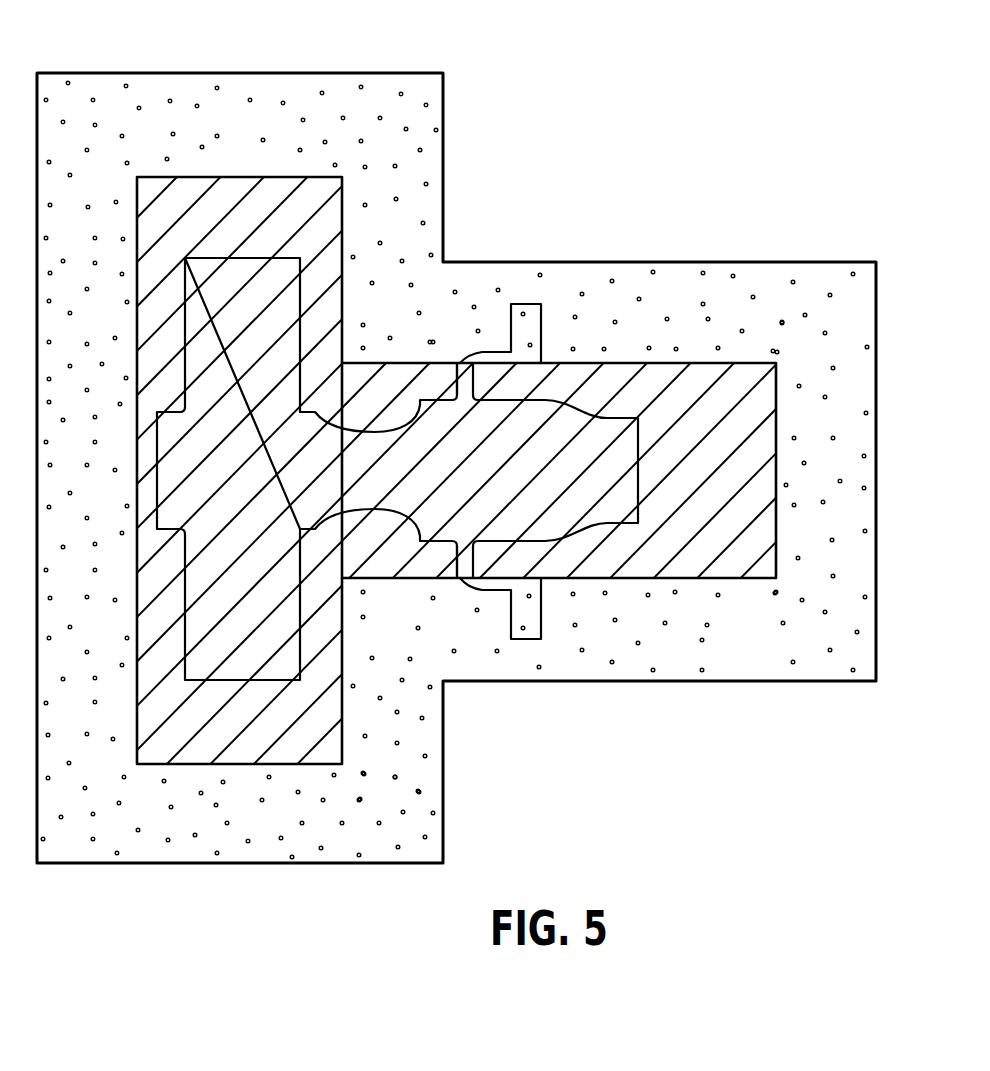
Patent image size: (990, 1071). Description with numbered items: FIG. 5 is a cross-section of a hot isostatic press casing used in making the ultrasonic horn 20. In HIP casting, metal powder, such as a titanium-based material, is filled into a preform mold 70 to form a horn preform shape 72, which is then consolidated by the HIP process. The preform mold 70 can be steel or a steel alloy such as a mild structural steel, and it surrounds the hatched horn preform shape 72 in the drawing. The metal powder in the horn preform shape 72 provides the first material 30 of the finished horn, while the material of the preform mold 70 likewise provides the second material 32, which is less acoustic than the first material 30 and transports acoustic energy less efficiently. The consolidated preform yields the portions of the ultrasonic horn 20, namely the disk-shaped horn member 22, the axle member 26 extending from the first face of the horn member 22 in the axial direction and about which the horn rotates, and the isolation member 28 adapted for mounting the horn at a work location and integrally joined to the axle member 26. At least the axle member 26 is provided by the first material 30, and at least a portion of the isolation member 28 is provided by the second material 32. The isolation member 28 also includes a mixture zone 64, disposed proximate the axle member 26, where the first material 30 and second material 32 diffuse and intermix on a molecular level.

The ultrasonic horn 20 is at (548, 412).
The horn member 22 is at (270, 272).
The axle member 26 is at (367, 508).
The isolation member 28 is at (503, 352).
The first material 30 is at (763, 413).
The second material 32 is at (833, 316).
The mixture zone 64 is at (460, 362).
The preform mold 70 is at (675, 290).
The horn preform shape 72 is at (665, 565).